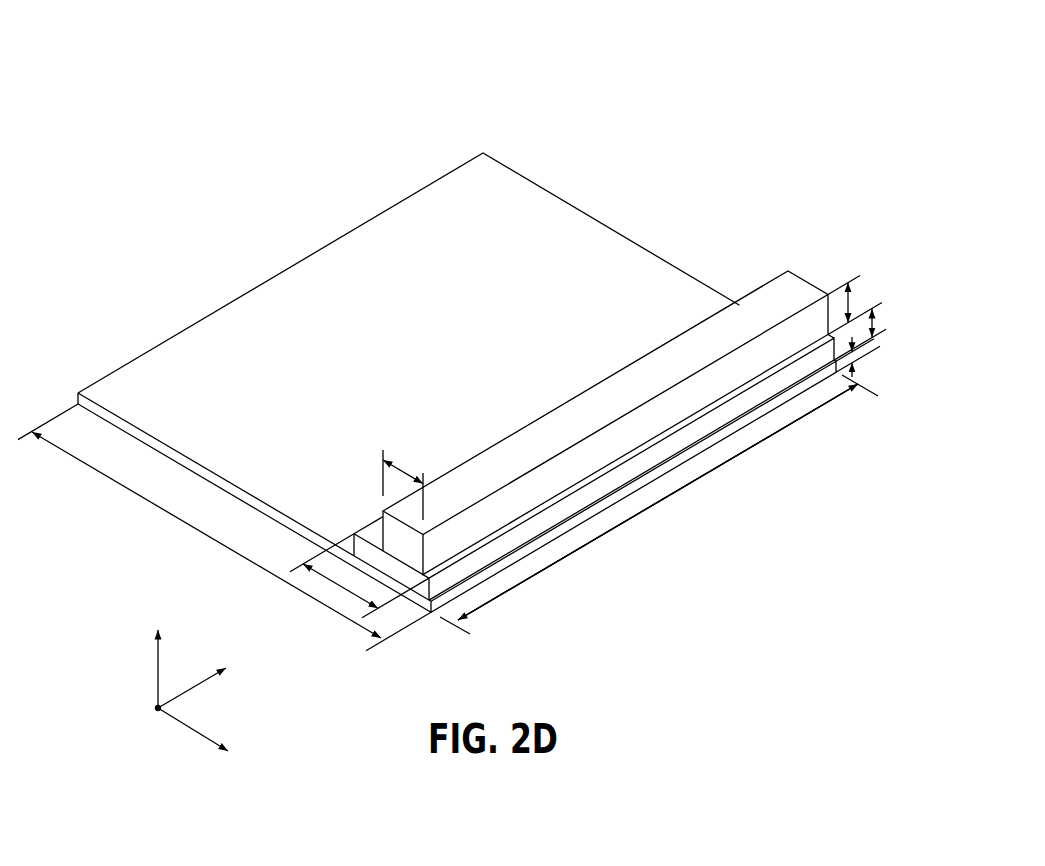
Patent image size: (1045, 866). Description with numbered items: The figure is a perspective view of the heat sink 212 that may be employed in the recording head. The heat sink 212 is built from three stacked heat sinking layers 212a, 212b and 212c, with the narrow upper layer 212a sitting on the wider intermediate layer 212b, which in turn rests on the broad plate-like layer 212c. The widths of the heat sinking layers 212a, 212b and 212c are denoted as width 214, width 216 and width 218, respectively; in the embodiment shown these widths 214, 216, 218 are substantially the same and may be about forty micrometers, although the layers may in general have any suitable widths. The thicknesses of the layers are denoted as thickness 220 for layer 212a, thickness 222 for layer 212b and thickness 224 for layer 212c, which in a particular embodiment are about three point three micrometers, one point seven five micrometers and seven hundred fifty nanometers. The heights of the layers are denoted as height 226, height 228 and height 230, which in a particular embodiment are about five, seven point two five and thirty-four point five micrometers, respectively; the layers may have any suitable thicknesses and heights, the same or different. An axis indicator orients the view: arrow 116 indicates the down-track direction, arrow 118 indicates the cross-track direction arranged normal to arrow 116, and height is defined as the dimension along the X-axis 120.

The heat sink 212 is at (757, 78).
The heat sinking layer 212a is at (793, 290).
The heat sinking layer 212b is at (777, 378).
The heat sinking layer 212c is at (140, 378).
The width of heat sinking layer 214 is at (772, 435).
The width of heat sinking layer 216 is at (680, 489).
The width of heat sinking layer 218 is at (610, 530).
The thickness of heat sinking layer 220 is at (850, 300).
The thickness of heat sinking layer 222 is at (872, 322).
The thickness of heat sinking layer 224 is at (866, 355).
The height of heat sinking layer 226 is at (392, 462).
The height of heat sinking layer 228 is at (318, 578).
The height of heat sinking layer 230 is at (190, 527).
The arrow 116 is at (157, 683).
The arrow 118 is at (203, 685).
The X-axis 120 is at (183, 728).